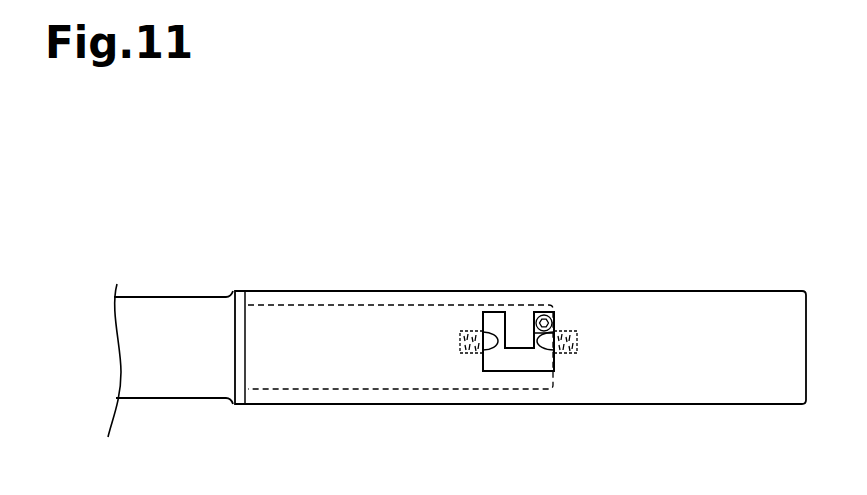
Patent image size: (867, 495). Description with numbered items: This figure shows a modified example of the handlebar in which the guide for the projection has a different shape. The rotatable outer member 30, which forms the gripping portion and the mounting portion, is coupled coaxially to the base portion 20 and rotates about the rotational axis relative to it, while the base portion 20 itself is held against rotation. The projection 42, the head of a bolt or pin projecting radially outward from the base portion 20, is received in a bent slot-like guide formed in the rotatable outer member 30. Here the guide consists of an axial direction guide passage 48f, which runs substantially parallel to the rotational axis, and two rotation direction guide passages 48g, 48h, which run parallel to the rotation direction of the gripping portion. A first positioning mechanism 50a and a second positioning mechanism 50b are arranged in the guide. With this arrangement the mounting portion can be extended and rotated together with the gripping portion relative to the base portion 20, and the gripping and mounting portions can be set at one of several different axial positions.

The base portion 20 is at (170, 377).
The rotatable outer member 30 is at (732, 387).
The projection 42 is at (549, 321).
The axial direction guide passage 48f is at (517, 357).
The rotation direction guide passage 48g is at (534, 332).
The rotation direction guide passage 48h is at (494, 318).
The first positioning mechanism 50a is at (577, 340).
The second positioning mechanism 50b is at (461, 340).